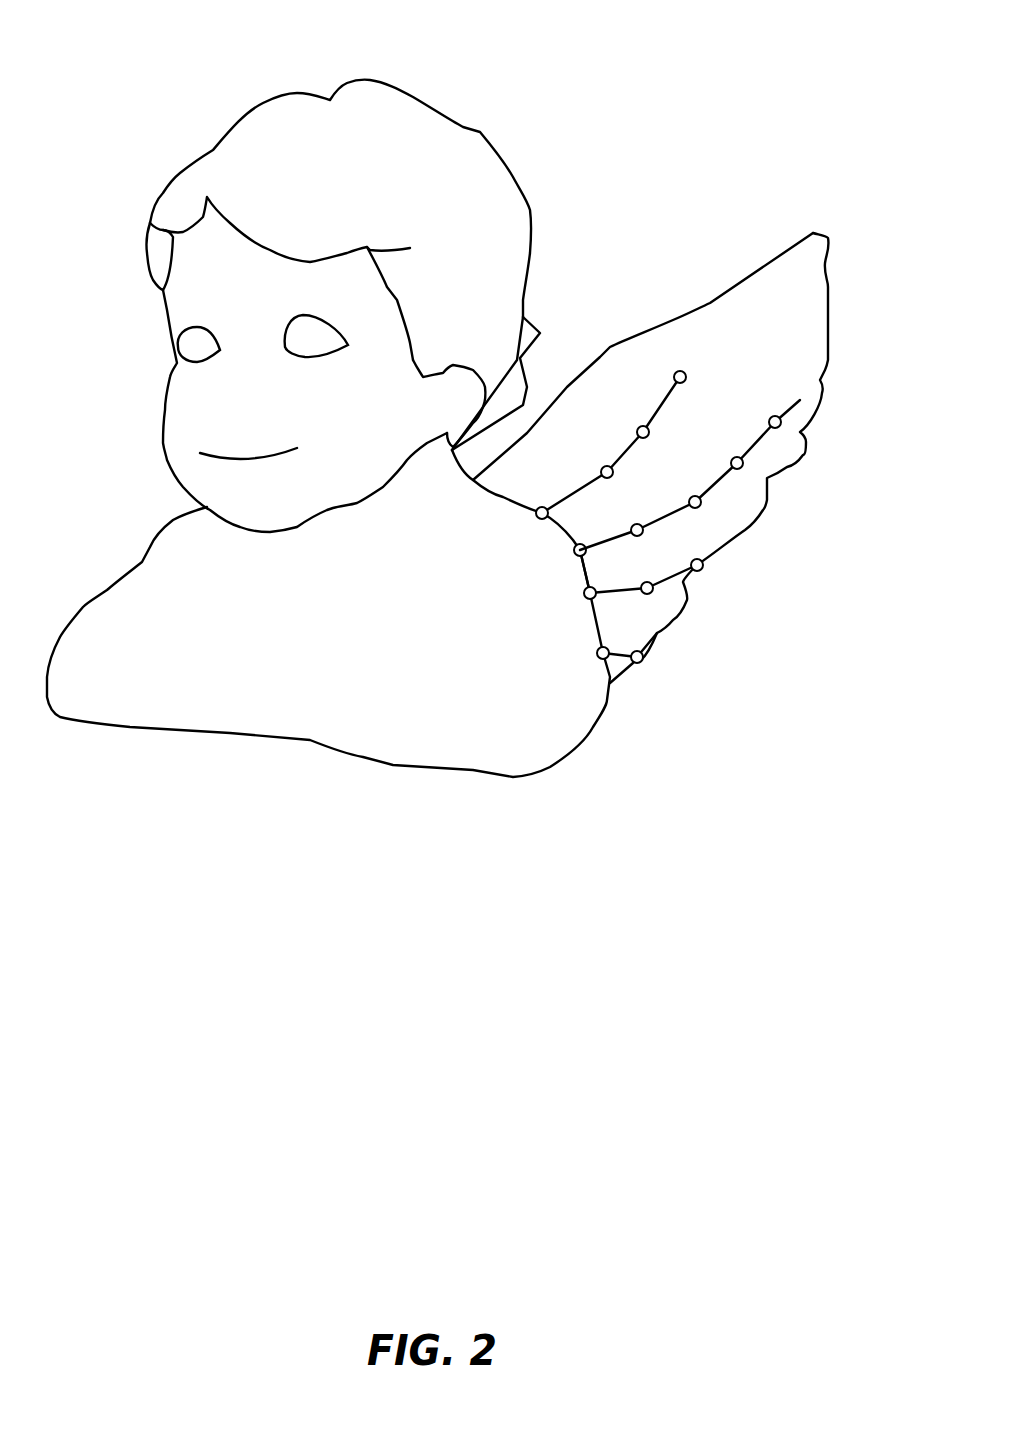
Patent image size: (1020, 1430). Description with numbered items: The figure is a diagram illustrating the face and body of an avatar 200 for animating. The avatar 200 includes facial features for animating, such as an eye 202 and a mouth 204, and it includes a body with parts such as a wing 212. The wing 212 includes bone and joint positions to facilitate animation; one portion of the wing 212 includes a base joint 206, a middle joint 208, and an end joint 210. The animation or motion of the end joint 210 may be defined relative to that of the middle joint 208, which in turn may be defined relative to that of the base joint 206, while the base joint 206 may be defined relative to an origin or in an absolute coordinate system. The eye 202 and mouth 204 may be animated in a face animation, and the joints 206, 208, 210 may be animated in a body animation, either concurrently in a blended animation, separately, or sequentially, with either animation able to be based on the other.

The avatar 200 is at (694, 34).
The eye 202 is at (183, 325).
The mouth 204 is at (202, 447).
The base joint 206 is at (577, 556).
The middle joint 208 is at (637, 524).
The end joint 210 is at (800, 400).
The wing 212 is at (613, 343).